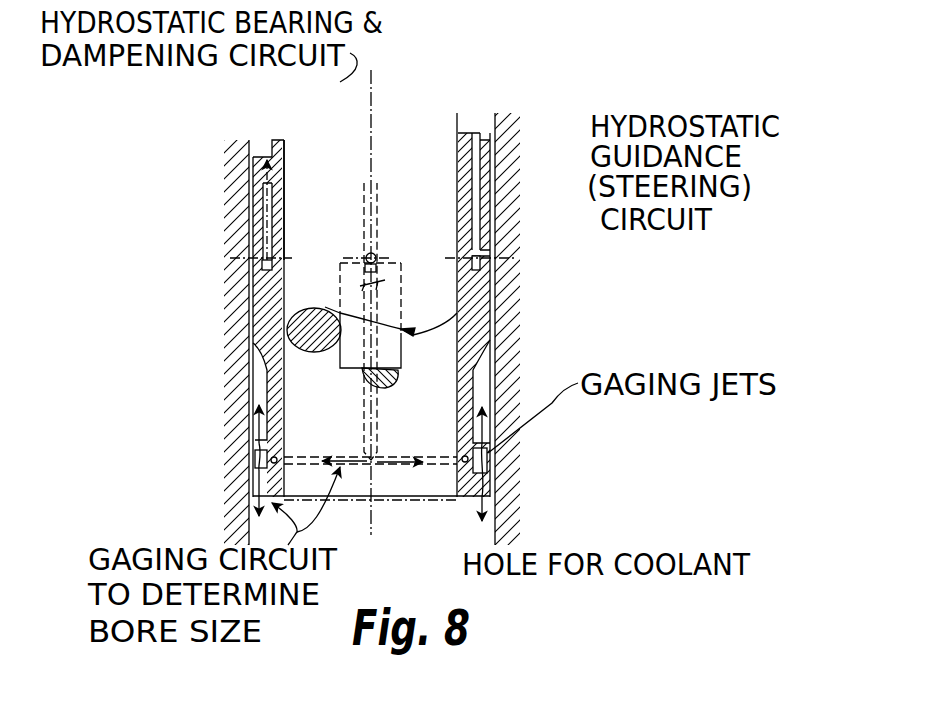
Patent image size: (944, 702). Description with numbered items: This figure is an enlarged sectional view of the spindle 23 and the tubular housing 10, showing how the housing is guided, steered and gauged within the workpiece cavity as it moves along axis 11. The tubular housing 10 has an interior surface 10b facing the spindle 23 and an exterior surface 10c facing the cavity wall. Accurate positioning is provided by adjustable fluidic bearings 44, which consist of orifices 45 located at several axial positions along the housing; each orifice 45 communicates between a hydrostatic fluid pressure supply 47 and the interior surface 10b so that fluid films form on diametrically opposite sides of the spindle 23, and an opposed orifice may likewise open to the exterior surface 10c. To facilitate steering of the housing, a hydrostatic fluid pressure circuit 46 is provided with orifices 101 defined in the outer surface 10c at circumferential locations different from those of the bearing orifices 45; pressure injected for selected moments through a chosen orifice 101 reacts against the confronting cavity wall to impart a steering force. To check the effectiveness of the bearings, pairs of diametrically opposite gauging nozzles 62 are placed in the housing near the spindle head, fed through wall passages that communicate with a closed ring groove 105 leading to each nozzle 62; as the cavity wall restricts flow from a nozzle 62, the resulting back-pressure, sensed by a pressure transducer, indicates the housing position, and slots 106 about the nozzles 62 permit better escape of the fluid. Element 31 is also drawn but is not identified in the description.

The tubular housing 10 is at (247, 309).
The interior surface of the tubular housing 10b is at (284, 304).
The exterior surface of the tubular housing 10c is at (250, 342).
The axis 11 is at (374, 519).
The spindle 23 is at (308, 355).
The pivot element 31 is at (402, 368).
The adjustable fluidic bearings 44 is at (287, 250).
The orifices 45 is at (288, 257).
The hydrostatic fluid pressure circuit 46 is at (496, 248).
The hydrostatic fluid pressure supply 47 is at (269, 191).
The gauging nozzles 62 is at (256, 443).
The orifices 101 is at (497, 254).
The closed ring groove 105 is at (343, 455).
The slots 106 is at (495, 371).